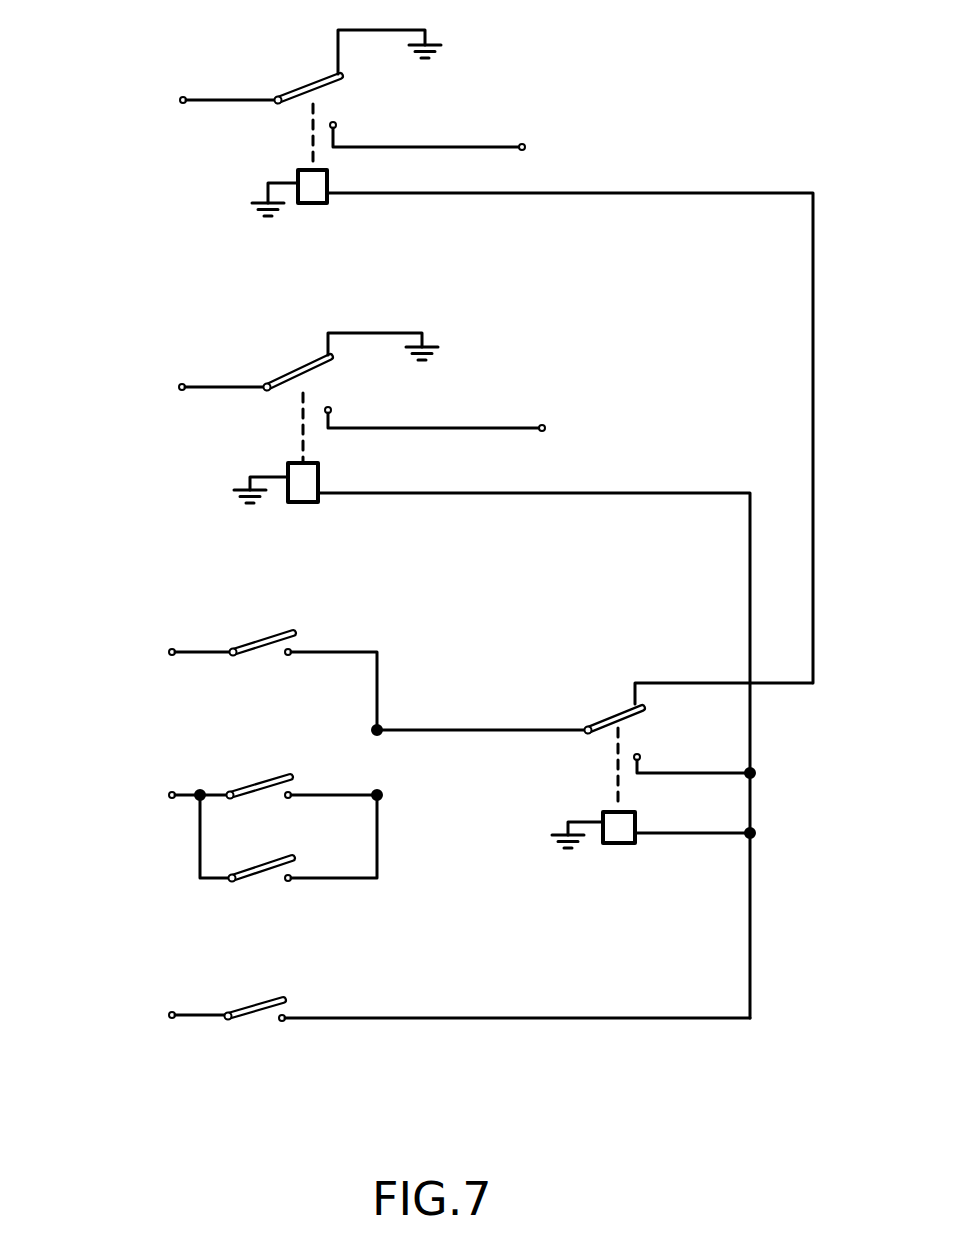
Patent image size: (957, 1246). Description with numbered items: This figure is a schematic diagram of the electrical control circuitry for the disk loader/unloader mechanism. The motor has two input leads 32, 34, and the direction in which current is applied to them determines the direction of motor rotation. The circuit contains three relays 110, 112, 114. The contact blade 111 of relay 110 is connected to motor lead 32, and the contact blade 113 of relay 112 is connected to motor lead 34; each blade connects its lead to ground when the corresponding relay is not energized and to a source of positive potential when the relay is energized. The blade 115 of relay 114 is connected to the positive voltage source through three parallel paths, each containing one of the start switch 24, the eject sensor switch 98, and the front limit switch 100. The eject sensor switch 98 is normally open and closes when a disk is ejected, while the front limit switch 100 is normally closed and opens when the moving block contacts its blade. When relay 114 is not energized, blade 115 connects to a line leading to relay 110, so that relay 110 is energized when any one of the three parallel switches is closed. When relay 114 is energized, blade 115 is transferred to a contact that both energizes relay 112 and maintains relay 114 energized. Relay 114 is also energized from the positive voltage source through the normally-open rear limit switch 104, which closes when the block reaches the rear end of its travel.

The motor lead 32 is at (228, 101).
The contact blade 111 is at (296, 89).
The relay 110 is at (297, 171).
The motor lead 34 is at (217, 387).
The contact blade 113 is at (288, 373).
The relay 112 is at (318, 474).
The front limit switch 100 is at (252, 642).
The start switch 24 is at (253, 782).
The eject sensor switch 98 is at (262, 860).
The blade 115 is at (603, 718).
The relay 114 is at (617, 835).
The rear limit switch 104 is at (252, 1005).